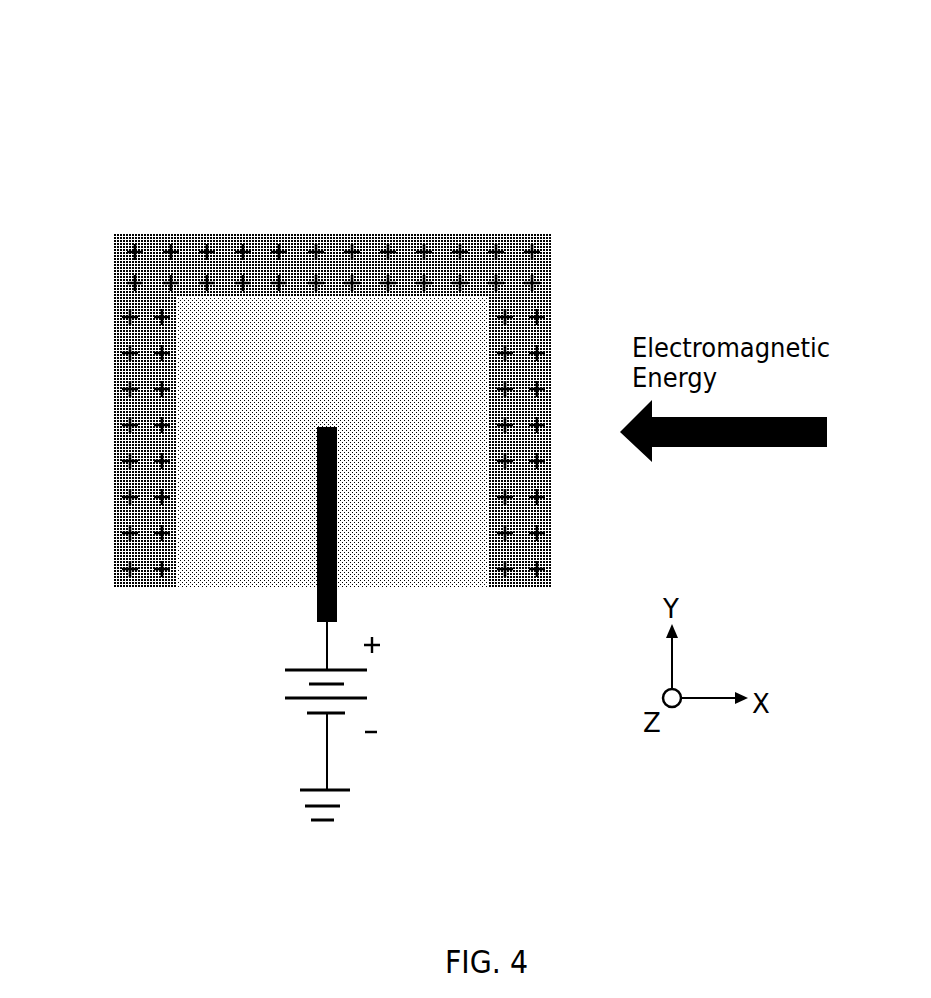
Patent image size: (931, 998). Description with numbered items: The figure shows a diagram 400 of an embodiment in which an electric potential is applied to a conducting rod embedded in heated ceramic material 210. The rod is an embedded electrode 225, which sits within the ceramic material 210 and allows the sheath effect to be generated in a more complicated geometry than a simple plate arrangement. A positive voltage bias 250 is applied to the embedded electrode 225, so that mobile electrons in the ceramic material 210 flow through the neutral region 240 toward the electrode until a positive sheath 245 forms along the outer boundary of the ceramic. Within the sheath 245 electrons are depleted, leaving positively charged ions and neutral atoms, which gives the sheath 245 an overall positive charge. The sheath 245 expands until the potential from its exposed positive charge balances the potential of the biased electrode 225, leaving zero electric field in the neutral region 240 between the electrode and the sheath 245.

The diagram 400 is at (430, 297).
The positive sheath 245 is at (552, 280).
The ceramic material 210 is at (445, 438).
The embedded electrode 225 is at (318, 588).
The neutral region 240 is at (258, 468).
The positive voltage bias 250 is at (283, 727).